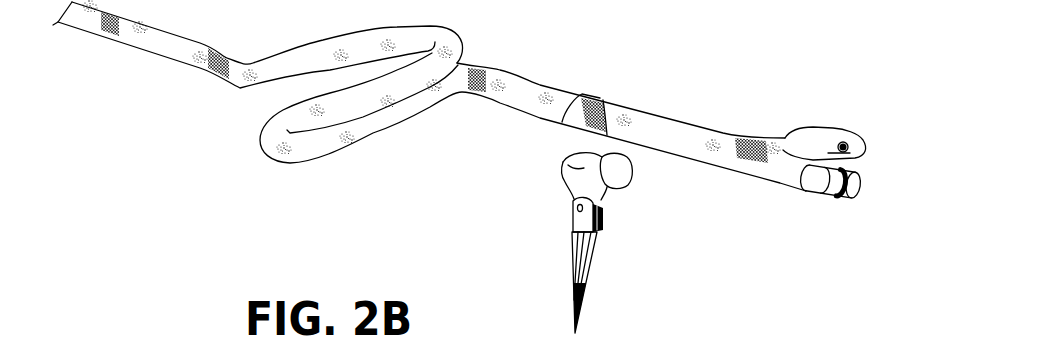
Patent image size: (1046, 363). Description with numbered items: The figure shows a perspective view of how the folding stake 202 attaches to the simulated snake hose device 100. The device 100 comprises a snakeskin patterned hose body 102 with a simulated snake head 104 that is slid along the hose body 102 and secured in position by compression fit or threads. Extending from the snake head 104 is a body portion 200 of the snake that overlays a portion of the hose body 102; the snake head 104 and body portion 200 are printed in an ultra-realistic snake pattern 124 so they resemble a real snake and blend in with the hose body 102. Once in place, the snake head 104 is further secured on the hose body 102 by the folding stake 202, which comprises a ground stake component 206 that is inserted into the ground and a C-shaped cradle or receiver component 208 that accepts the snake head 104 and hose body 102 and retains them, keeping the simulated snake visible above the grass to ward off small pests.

The simulated snake hose device 100 is at (873, 153).
The hose body 102 is at (803, 177).
The simulated snake head 104 is at (800, 135).
The snake pattern 124 is at (602, 92).
The body portion 200 is at (680, 122).
The folding stake 202 is at (620, 243).
The ground stake component 206 is at (583, 288).
The receiver component 208 is at (568, 165).